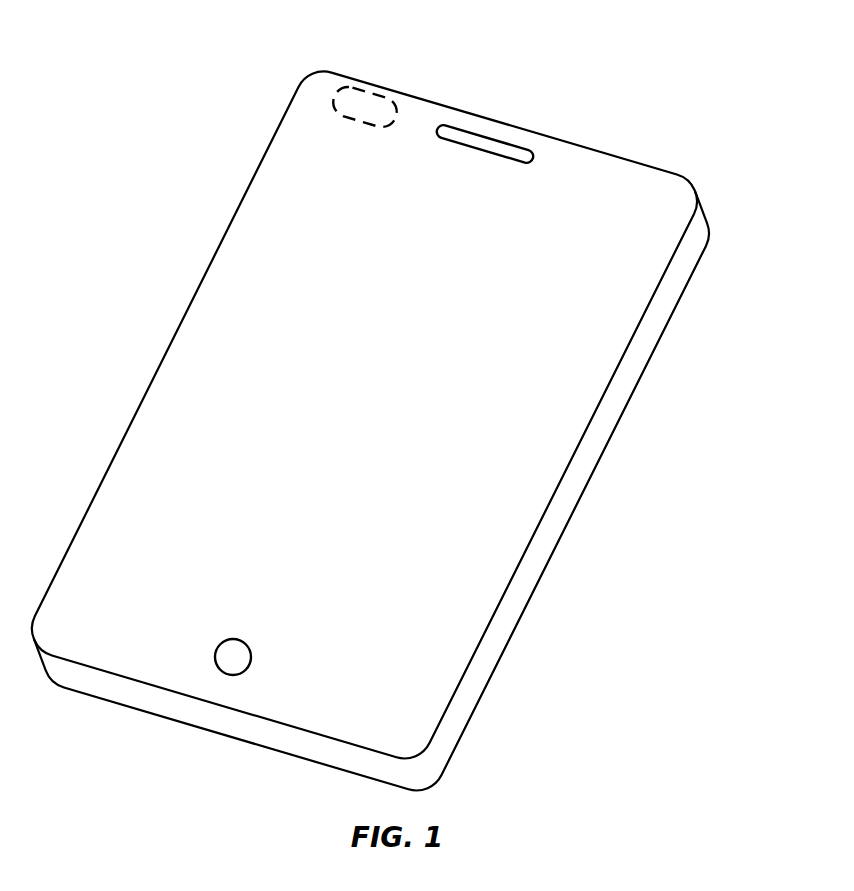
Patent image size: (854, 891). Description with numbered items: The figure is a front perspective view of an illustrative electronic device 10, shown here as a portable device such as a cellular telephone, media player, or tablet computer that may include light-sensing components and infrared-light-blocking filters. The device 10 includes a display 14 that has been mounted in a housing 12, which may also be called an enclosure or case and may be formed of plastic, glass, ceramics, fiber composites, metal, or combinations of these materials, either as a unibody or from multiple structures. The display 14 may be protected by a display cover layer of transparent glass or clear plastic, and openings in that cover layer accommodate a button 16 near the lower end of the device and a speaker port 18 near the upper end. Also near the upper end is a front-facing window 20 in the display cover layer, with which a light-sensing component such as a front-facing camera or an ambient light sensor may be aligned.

The electronic device 10 is at (405, 407).
The housing 12 is at (706, 196).
The display 14 is at (540, 424).
The button 16 is at (232, 676).
The speaker port 18 is at (487, 133).
The window 20 is at (359, 94).